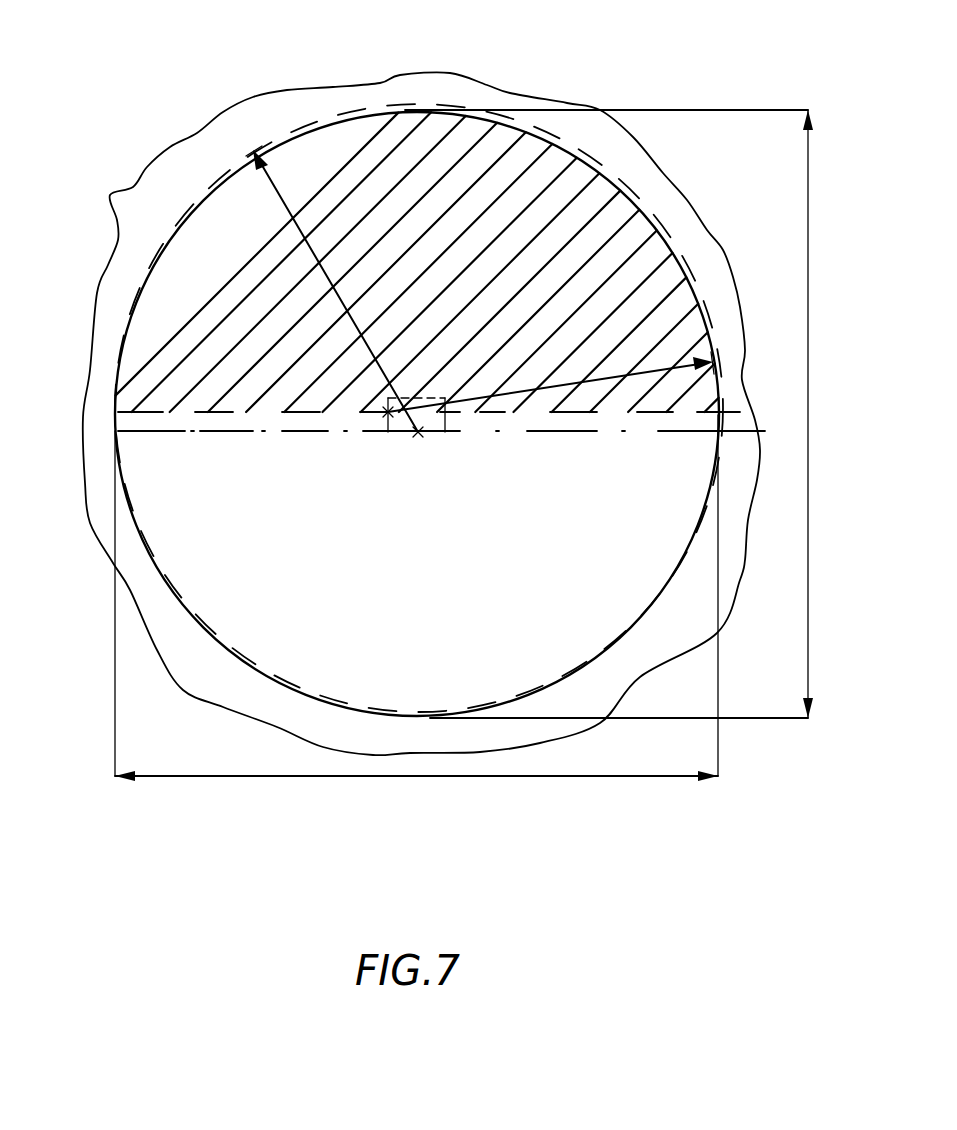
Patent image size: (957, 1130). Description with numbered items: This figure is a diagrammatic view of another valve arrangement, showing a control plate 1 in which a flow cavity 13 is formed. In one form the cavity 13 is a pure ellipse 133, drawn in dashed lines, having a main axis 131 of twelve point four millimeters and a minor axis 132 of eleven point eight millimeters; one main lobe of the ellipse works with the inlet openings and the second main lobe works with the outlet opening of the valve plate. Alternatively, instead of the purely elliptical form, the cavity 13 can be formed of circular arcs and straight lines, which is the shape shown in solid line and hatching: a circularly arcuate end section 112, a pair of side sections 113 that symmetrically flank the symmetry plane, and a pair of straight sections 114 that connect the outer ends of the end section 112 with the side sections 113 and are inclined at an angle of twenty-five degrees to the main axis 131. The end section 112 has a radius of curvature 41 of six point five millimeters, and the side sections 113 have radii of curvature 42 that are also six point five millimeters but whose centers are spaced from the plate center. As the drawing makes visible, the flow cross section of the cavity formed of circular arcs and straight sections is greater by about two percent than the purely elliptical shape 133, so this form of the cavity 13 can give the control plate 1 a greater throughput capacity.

The control plate 1 is at (386, 98).
The flow cavity 13 is at (570, 640).
The radius of curvature 41 is at (346, 309).
The radii of curvature 42 is at (583, 381).
The end section 112 is at (649, 103).
The side sections 113 is at (643, 203).
The straight sections 114 is at (693, 112).
The main axis 131 is at (808, 488).
The minor axis 132 is at (248, 776).
The ellipse 133 is at (696, 287).